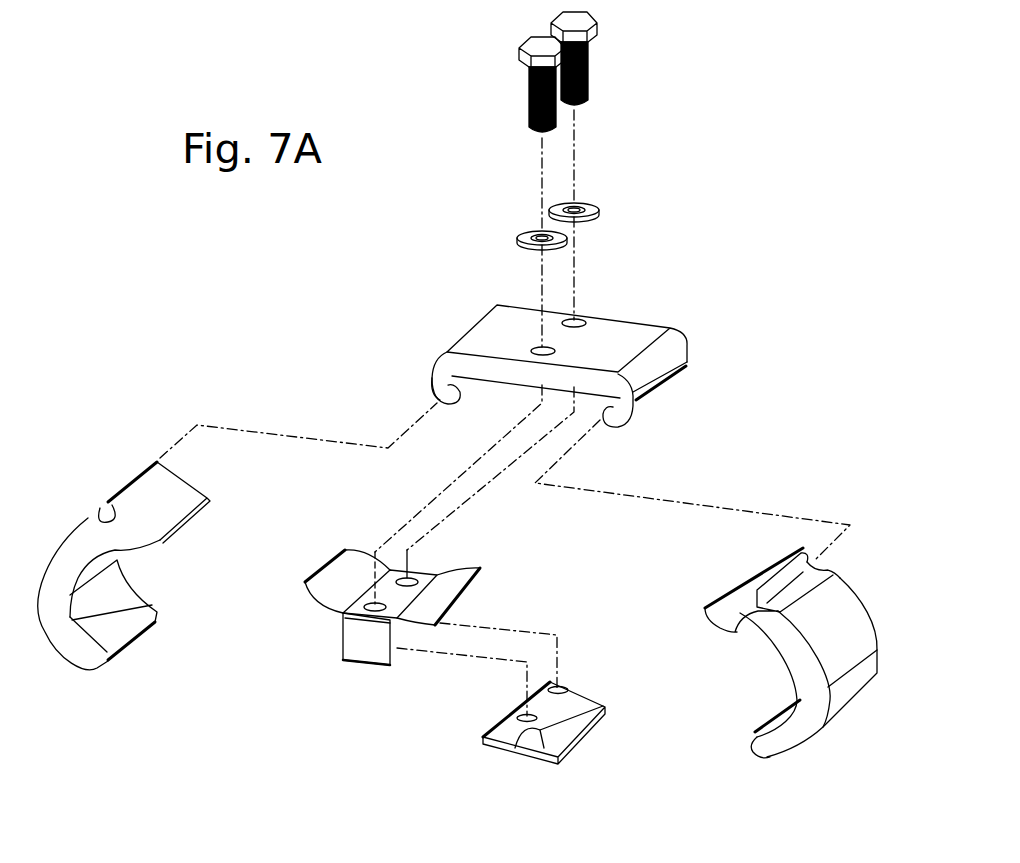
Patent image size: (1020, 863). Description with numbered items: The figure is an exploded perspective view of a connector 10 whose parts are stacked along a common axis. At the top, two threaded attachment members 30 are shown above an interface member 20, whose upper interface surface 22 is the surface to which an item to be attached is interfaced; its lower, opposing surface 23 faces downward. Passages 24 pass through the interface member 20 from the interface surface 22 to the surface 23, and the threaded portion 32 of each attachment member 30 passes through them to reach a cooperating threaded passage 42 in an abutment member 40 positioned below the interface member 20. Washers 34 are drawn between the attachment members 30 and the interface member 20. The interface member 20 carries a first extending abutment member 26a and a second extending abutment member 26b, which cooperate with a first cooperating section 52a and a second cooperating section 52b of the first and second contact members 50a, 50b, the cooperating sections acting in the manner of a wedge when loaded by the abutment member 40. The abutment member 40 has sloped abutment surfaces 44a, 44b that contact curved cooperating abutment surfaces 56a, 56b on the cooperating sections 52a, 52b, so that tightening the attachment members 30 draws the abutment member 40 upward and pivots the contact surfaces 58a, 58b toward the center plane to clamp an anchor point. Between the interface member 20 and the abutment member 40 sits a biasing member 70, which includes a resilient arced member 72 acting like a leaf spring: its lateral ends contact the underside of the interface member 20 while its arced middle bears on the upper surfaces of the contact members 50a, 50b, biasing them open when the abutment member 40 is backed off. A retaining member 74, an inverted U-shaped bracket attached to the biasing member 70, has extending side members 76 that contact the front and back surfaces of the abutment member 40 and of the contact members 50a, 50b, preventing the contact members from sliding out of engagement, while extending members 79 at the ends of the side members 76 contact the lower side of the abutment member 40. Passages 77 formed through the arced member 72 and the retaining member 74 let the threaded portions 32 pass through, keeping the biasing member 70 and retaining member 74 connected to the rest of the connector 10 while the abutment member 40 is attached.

The connector 10 is at (285, 318).
The interface member 20 is at (440, 306).
The interface surface 22 is at (512, 312).
The lower, opposing surface 23 is at (440, 408).
The passages 24 is at (592, 318).
The first extending abutment member 26a is at (432, 372).
The second extending abutment member 26b is at (650, 395).
The threaded attachment members 30 is at (598, 68).
The threaded portion 32 is at (596, 92).
The washers 34 is at (600, 200).
The abutment member 40 is at (595, 790).
The cooperating threaded passage 42 is at (560, 680).
The sloped abutment surface 44a is at (510, 718).
The sloped abutment surface 44b is at (575, 718).
The first contact member 50a is at (130, 578).
The second contact member 50b is at (833, 742).
The first cooperating section 52a is at (85, 512).
The second cooperating section 52b is at (740, 645).
The cooperating abutment surface 56a is at (148, 545).
The cooperating abutment surface 56b is at (715, 628).
The contact surface 58a is at (135, 645).
The contact surface 58b is at (748, 750).
The biasing member 70 is at (360, 540).
The arced member 72 is at (340, 572).
The retaining member 74 is at (330, 640).
The extending side members 76 is at (450, 605).
The passages 77 is at (428, 565).
The extending members 79 is at (445, 633).